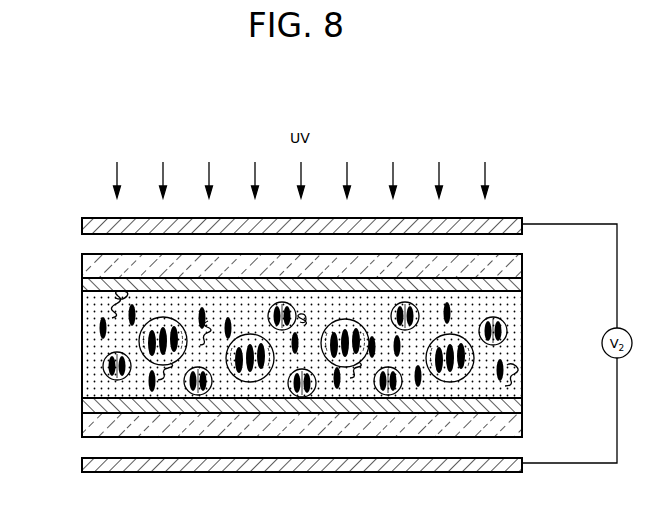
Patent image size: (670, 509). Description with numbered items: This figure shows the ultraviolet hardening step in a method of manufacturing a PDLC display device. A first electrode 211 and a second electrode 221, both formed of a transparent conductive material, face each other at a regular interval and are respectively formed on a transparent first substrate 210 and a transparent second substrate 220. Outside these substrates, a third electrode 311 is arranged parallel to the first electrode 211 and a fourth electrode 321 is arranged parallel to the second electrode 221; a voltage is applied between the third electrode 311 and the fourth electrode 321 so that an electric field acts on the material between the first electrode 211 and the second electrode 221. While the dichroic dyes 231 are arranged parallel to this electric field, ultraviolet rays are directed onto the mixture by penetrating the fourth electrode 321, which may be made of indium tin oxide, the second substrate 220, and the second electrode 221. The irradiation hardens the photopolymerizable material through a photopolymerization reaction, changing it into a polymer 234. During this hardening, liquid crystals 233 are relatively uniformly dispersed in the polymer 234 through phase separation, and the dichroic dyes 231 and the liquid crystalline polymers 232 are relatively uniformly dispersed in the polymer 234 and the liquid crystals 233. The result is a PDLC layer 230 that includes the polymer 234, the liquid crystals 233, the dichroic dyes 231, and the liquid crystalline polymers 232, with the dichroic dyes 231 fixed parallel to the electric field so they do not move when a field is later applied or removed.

The fourth electrode 321 is at (82, 225).
The second substrate 220 is at (84, 262).
The second electrode 221 is at (84, 286).
The PDLC layer 230 is at (303, 343).
The dichroic dyes 231 is at (100, 329).
The liquid crystalline polymers 232 is at (112, 300).
The liquid crystals 233 is at (104, 364).
The polymer 234 is at (94, 390).
The first electrode 211 is at (84, 406).
The first substrate 210 is at (84, 428).
The third electrode 311 is at (82, 466).